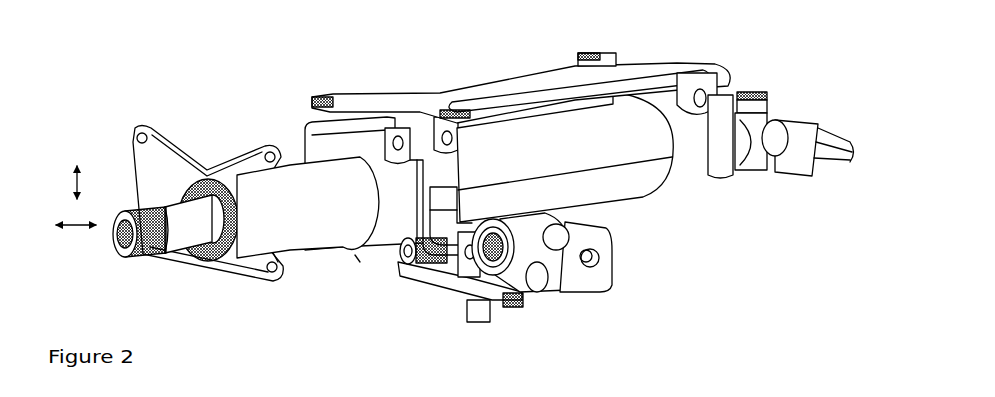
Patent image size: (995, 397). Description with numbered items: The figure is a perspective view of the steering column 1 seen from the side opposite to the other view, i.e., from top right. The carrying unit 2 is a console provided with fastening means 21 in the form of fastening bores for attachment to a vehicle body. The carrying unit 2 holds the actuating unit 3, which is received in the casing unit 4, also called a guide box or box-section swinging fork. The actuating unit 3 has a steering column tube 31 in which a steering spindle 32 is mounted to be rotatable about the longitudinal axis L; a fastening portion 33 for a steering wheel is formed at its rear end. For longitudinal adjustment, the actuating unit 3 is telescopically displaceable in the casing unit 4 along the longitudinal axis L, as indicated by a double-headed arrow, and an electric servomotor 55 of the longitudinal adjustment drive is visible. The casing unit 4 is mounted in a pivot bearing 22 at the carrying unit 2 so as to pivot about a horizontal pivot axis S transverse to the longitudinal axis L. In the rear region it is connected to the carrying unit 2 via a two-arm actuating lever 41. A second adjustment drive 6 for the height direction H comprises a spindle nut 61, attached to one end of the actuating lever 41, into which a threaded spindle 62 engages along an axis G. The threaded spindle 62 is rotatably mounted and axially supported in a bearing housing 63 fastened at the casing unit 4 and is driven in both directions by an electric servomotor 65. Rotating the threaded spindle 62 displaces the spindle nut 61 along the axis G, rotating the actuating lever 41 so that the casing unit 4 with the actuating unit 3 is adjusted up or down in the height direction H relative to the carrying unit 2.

The steering column 1 is at (470, 62).
The carrying unit 2 is at (465, 96).
The fastening means 21 is at (593, 52).
The pivot bearing 22 is at (700, 92).
The actuating unit 3 is at (296, 262).
The steering column tube 31 is at (312, 230).
The steering spindle 32 is at (177, 232).
The fastening portion 33 is at (138, 204).
The casing unit 4 is at (615, 138).
The actuating lever 41 is at (438, 172).
The electric servomotor 55 is at (597, 241).
The adjustment drive 6 is at (541, 302).
The spindle nut 61 is at (450, 272).
The threaded spindle 62 is at (430, 272).
The bearing housing 63 is at (525, 245).
The electric servomotor 65 is at (418, 275).
The pivot axis S is at (790, 112).
The height direction H is at (74, 180).
The longitudinal axis L is at (110, 238).
The axis G is at (358, 270).